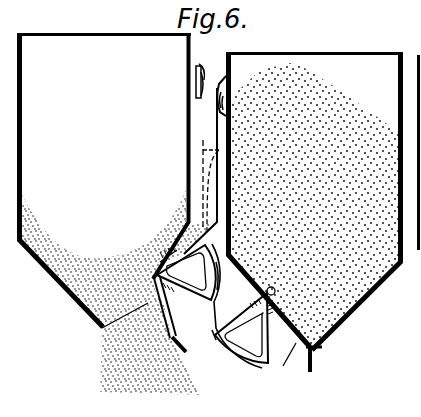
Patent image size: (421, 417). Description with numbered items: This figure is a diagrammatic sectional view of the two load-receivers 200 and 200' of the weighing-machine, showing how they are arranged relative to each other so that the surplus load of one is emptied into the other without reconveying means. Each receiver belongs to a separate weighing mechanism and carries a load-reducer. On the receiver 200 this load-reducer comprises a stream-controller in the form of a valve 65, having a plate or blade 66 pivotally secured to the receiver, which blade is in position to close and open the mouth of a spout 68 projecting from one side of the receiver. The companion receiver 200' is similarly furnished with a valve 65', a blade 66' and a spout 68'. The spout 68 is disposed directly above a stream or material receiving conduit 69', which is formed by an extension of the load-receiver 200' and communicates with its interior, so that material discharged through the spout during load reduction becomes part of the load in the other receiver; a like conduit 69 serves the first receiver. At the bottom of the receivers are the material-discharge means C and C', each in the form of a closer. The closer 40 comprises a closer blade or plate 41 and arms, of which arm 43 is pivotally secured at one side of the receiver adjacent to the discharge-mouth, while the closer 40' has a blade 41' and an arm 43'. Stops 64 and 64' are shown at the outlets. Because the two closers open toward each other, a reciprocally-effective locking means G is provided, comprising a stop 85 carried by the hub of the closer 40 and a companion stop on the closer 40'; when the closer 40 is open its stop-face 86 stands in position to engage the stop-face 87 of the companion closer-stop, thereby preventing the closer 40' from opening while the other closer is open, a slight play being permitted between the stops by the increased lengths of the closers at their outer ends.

The load-receiver 200 is at (104, 170).
The load-receiver 200' is at (322, 192).
The valve blade 66 is at (171, 67).
The valve 65 is at (170, 84).
The spout 68 is at (169, 87).
The valve blade 66' is at (186, 106).
The valve 65' is at (186, 116).
The spout 68' is at (215, 81).
The material-receiving conduit 69 is at (173, 184).
The material-receiving conduit 69' is at (183, 190).
The stop 85 is at (177, 250).
The stop-face 86 is at (218, 284).
The stop-face 87 is at (214, 333).
The closer arm 43 is at (105, 324).
The closer blade 41 is at (116, 318).
The closer 40 is at (119, 325).
The stop 64 is at (188, 354).
The closer arm 43' is at (335, 337).
The closer blade 41' is at (280, 364).
The closer 40' is at (327, 359).
The stop 64' is at (323, 368).
The material-discharge means C is at (186, 272).
The material-discharge means C' is at (252, 325).
The reciprocally-effective locking means G is at (227, 302).